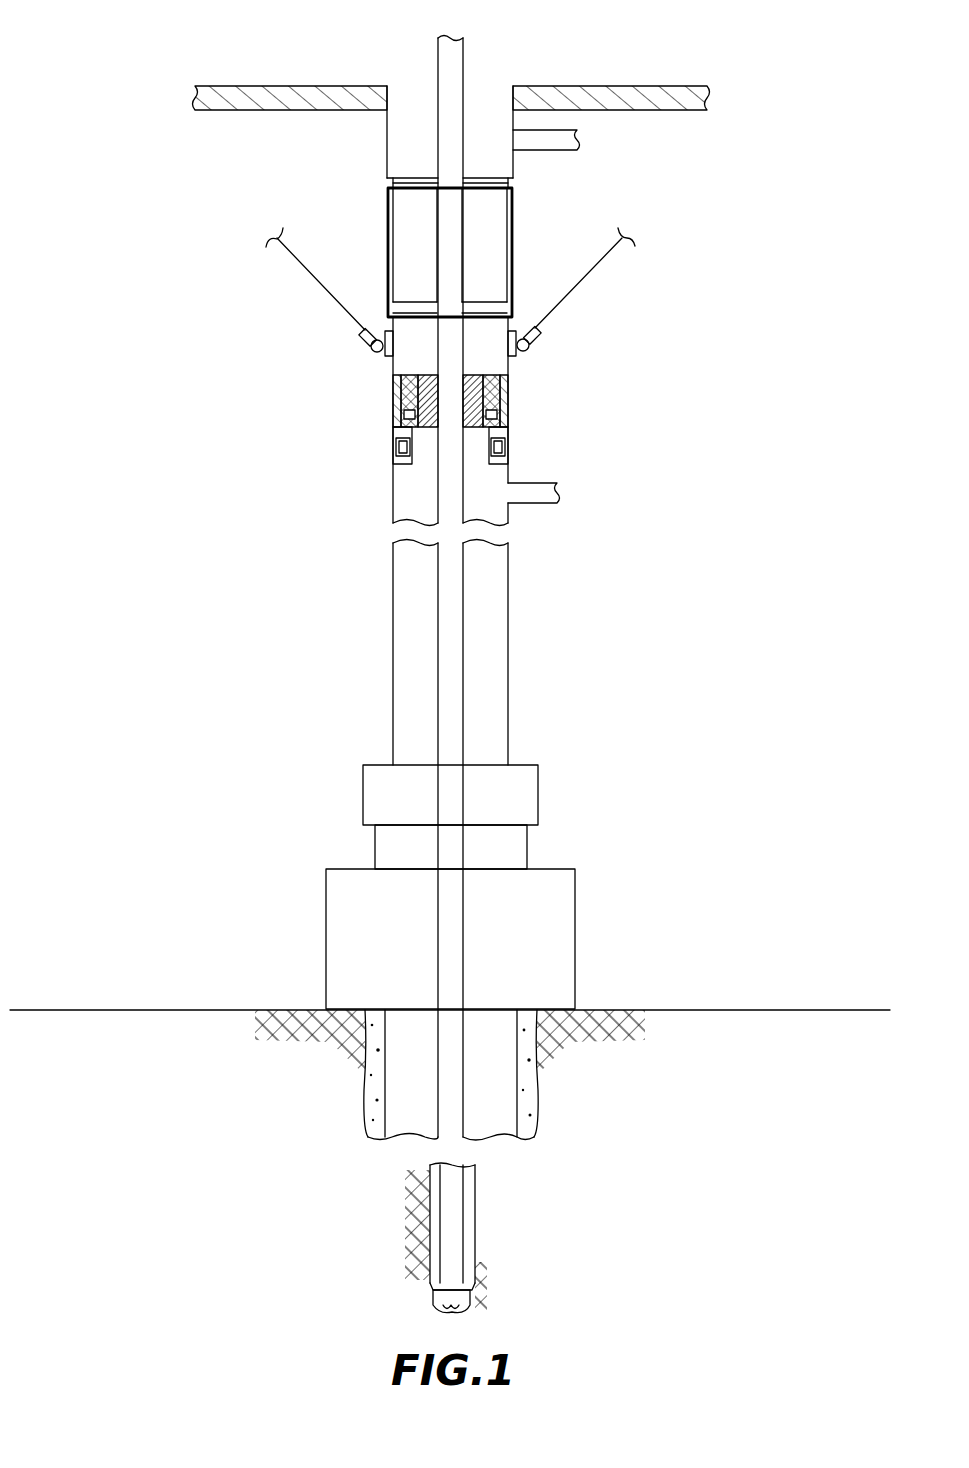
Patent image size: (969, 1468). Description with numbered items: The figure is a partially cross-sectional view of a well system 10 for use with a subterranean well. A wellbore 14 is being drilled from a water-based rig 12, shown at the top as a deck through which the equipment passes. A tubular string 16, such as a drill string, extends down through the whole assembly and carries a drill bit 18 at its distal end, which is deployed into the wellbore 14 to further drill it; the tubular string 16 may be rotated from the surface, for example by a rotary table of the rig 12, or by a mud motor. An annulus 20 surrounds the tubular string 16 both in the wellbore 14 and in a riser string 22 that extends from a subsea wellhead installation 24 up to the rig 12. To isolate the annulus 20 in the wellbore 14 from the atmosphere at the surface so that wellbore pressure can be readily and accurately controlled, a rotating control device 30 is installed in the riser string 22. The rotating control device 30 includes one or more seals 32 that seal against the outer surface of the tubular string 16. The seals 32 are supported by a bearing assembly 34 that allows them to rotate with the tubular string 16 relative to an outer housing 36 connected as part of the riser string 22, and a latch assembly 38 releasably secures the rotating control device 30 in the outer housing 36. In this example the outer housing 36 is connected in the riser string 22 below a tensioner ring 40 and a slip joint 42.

The system 10 is at (600, 397).
The water-based rig 12 is at (270, 86).
The wellbore 14 is at (459, 1188).
The tubular string 16 is at (438, 665).
The drill bit 18 is at (430, 1295).
The annulus 20 is at (493, 593).
The riser string 22 is at (393, 588).
The subsea wellhead installation 24 is at (553, 869).
The rotating control device 30 is at (426, 374).
The seals 32 is at (475, 373).
The bearing assembly 34 is at (393, 393).
The outer housing 36 is at (393, 431).
The latch assembly 38 is at (503, 445).
The tensioner ring 40 is at (518, 323).
The slip joint 42 is at (388, 230).